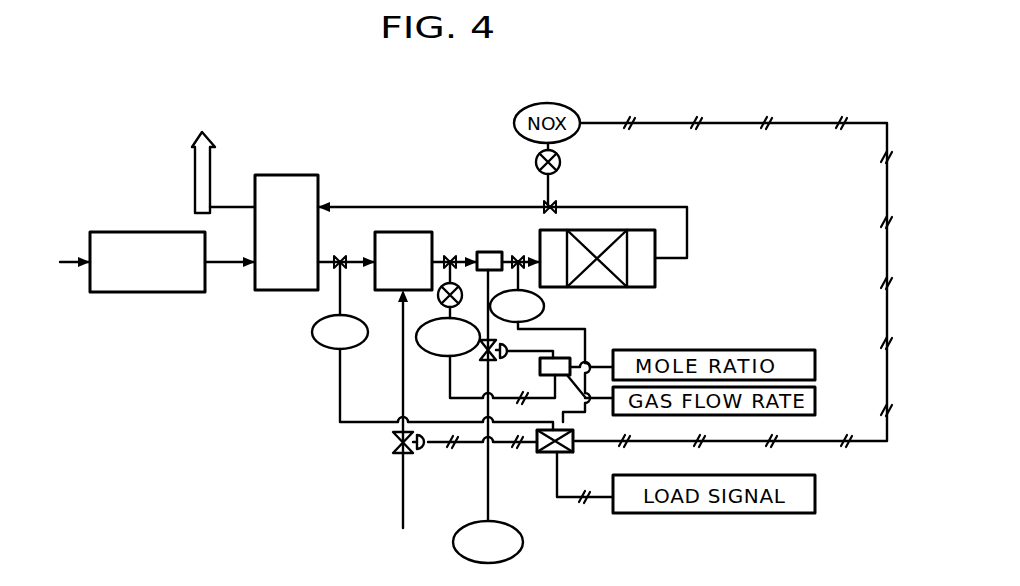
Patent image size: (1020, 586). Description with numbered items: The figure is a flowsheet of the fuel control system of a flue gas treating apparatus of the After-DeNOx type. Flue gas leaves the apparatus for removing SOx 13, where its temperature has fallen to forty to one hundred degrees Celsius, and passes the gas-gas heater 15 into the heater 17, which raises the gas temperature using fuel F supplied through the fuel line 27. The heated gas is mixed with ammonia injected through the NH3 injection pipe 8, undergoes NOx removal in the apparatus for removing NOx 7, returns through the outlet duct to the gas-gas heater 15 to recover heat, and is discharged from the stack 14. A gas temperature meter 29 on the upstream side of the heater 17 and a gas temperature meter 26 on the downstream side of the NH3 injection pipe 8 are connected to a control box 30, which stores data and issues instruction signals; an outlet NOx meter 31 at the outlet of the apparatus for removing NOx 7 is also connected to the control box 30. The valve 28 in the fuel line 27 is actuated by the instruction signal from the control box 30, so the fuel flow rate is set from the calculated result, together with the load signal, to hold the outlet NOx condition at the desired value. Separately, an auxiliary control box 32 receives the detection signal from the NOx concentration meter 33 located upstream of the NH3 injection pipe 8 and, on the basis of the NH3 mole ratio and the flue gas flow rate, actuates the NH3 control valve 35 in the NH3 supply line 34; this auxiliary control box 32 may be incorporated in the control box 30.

The apparatus for removing NOx 7 is at (618, 288).
The NH3 injection pipe 8 is at (485, 252).
The apparatus for removing SOx 13 is at (142, 292).
The stack 14 is at (195, 180).
The gas-gas heater 15 is at (288, 180).
The heater 17 is at (375, 244).
The gas temperature meter 26 is at (545, 306).
The fuel line 27 is at (403, 497).
The valve 28 is at (393, 450).
The gas temperature meter 29 is at (312, 335).
The control box 30 is at (540, 452).
The outlet NOx meter 31 is at (560, 160).
The auxiliary control box 32 is at (565, 358).
The NOx concentration meter 33 is at (428, 355).
The NH3 supply line 34 is at (488, 493).
The NH3 control valve 35 is at (493, 360).